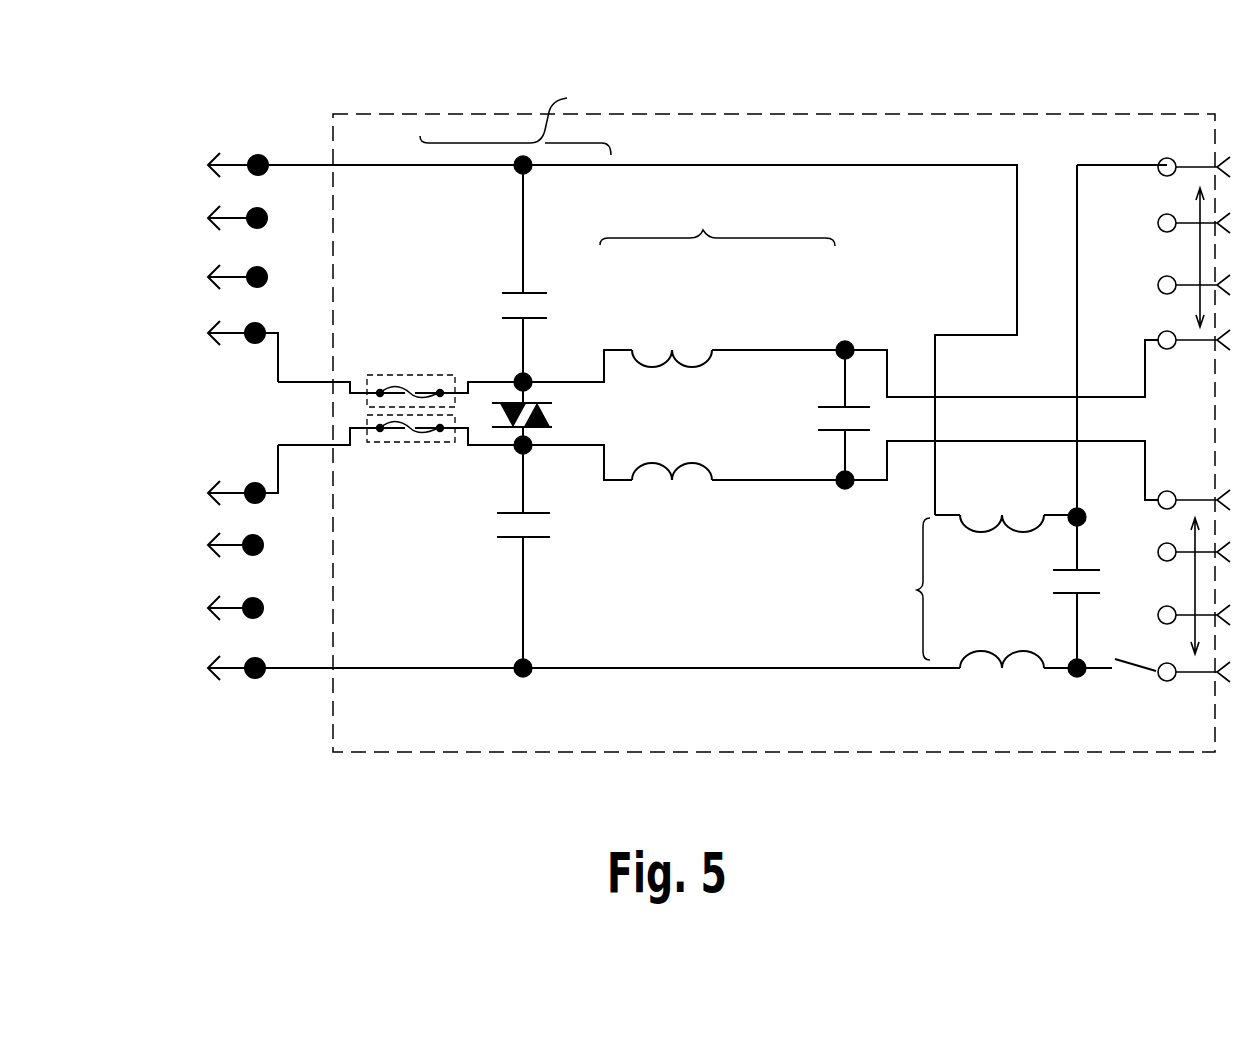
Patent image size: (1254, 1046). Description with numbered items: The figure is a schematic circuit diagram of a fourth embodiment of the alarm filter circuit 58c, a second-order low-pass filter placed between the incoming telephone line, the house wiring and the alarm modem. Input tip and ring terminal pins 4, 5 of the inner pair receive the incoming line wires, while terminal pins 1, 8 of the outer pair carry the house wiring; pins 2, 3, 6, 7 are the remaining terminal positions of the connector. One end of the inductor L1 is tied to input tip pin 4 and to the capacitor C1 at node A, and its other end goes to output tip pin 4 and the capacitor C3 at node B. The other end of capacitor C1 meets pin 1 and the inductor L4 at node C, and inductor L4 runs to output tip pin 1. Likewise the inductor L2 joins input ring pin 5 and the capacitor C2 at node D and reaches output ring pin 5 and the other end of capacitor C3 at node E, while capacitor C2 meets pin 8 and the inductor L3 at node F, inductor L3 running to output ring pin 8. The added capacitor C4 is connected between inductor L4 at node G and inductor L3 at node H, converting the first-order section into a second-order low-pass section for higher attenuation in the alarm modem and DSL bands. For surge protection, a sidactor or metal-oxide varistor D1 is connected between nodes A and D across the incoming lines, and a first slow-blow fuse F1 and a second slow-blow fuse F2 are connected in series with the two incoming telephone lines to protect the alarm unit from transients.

The alarm filter circuit 58c is at (1188, 128).
The tip terminal pin 1 is at (255, 179).
The terminal 2 is at (255, 224).
The terminal 3 is at (255, 273).
The tip terminal pin 4 is at (252, 339).
The ring terminal pin 5 is at (257, 477).
The terminal 6 is at (252, 545).
The terminal 7 is at (252, 602).
The ring terminal pin 8 is at (252, 655).
The capacitor C1 is at (563, 275).
The capacitor C2 is at (561, 568).
The capacitor C3 is at (812, 415).
The capacitor C4 is at (1035, 615).
The inductor L1 is at (672, 318).
The inductor L2 is at (690, 495).
The inductor L3 is at (1002, 692).
The inductor L4 is at (1006, 489).
The sidactor or metal-oxide varistor D1 is at (720, 420).
The first slow-blow fuse F1 is at (400, 376).
The second slow-blow fuse F2 is at (400, 446).